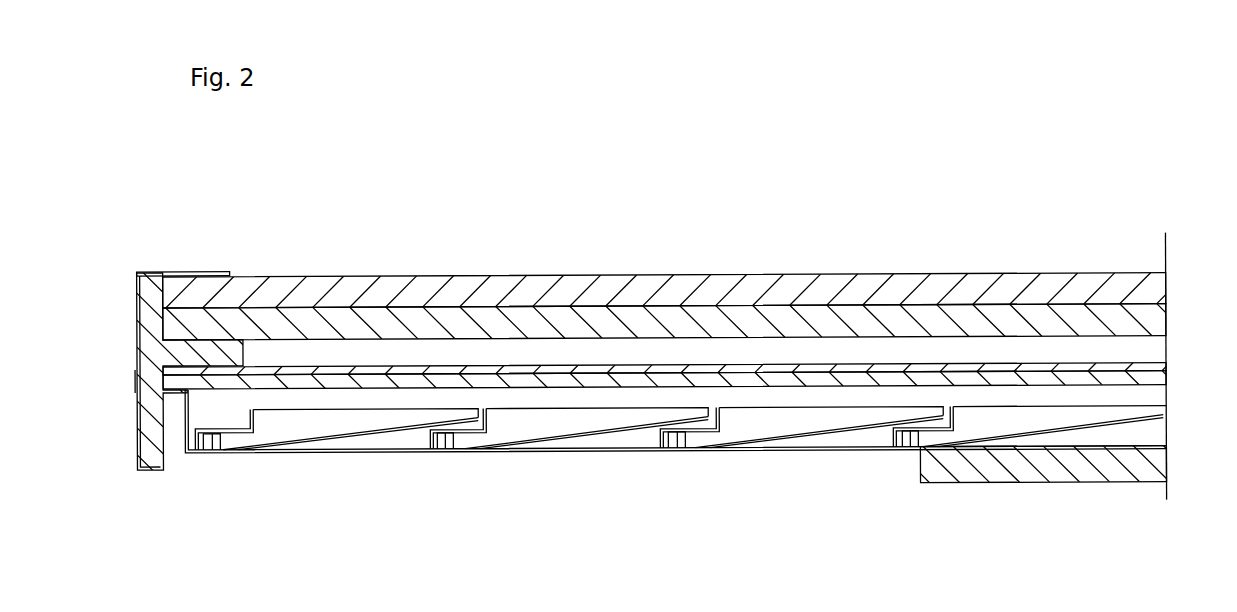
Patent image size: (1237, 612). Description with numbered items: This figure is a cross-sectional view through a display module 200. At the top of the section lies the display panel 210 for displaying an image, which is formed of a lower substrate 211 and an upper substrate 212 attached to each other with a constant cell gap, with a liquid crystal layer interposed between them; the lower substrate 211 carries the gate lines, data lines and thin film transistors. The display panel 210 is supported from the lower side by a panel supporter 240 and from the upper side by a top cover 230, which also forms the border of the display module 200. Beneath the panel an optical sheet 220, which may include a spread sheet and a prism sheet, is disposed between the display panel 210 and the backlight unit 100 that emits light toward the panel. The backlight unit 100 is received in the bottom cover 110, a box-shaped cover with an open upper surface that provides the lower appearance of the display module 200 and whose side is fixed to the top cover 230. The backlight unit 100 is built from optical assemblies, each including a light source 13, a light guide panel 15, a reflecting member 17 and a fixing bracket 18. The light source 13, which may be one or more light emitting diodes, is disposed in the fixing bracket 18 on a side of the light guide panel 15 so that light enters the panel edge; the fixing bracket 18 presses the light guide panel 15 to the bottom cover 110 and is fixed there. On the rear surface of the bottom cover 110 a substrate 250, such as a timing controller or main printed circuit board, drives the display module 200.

The backlight unit 100 is at (676, 455).
The bottom cover 110 is at (721, 457).
The light source 13 is at (440, 449).
The light guide panel 15 is at (578, 424).
The reflecting member 17 is at (618, 435).
The fixing bracket 18 is at (418, 441).
The display module 200 is at (696, 287).
The display panel 210 is at (675, 261).
The lower substrate 211 is at (937, 323).
The upper substrate 212 is at (860, 295).
The optical sheet 220 is at (1170, 367).
The top cover 230 is at (204, 272).
The panel supporter 240 is at (152, 463).
The substrate 250 is at (1043, 495).